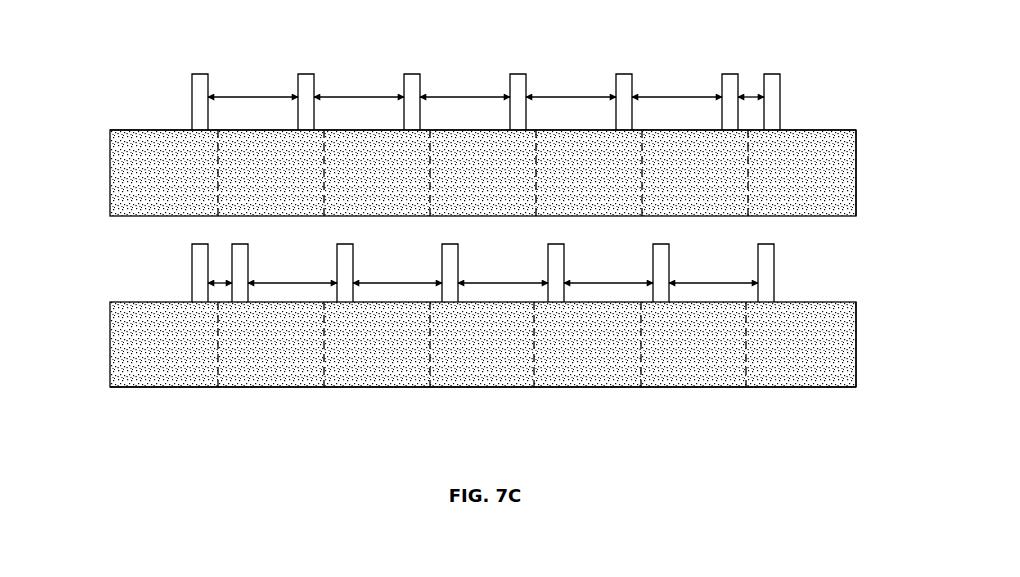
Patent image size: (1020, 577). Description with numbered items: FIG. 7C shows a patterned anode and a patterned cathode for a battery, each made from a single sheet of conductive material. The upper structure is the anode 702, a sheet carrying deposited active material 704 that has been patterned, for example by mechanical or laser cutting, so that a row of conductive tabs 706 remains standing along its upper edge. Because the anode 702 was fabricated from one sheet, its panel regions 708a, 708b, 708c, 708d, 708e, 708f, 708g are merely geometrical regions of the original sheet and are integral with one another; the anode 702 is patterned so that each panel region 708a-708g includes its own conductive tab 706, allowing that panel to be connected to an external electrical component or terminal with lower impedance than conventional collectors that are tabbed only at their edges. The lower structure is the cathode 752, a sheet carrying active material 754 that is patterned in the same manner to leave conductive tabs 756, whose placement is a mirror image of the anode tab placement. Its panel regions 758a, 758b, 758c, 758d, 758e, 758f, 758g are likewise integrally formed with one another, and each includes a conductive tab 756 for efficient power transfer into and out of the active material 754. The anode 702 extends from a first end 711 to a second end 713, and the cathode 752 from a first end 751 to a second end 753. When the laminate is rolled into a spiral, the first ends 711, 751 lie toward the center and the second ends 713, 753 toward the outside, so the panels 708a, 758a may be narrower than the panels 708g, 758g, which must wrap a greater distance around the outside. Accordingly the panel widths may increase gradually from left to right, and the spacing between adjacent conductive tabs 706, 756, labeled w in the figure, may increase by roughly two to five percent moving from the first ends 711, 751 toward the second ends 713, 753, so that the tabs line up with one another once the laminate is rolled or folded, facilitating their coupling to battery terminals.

The anode 702 is at (822, 128).
The active material 704 is at (847, 207).
The conductive tabs 706 is at (200, 78).
The panel region 708a is at (170, 208).
The panel region 708b is at (238, 208).
The panel region 708c is at (350, 208).
The panel region 708d is at (448, 208).
The panel region 708e is at (565, 208).
The panel region 708f is at (673, 208).
The panel region 708g is at (790, 208).
The first end 711 is at (481, 126).
The second end 713 is at (858, 156).
The first end 751 is at (481, 342).
The cathode 752 is at (833, 300).
The second end 753 is at (858, 378).
The active material 754 is at (848, 335).
The conductive tabs 756 is at (196, 268).
The panel region 758a is at (157, 380).
The panel region 758b is at (300, 380).
The panel region 758c is at (408, 380).
The panel region 758d is at (513, 380).
The panel region 758e is at (625, 380).
The panel region 758f is at (725, 380).
The panel region 758g is at (833, 380).